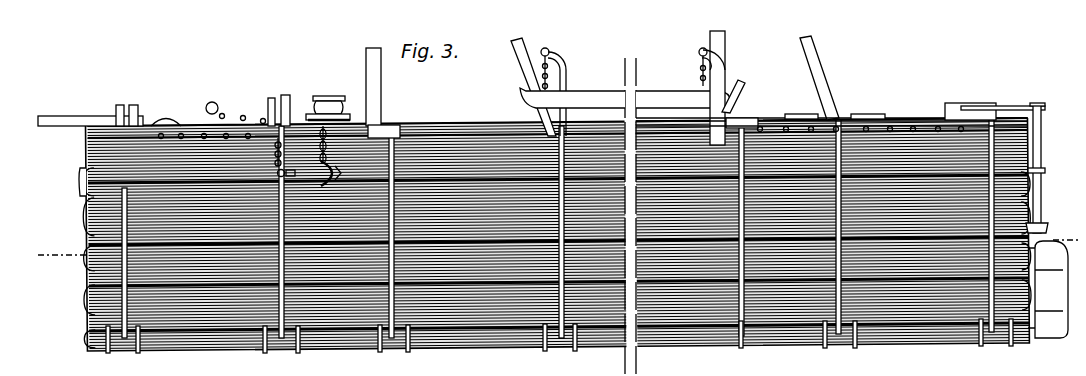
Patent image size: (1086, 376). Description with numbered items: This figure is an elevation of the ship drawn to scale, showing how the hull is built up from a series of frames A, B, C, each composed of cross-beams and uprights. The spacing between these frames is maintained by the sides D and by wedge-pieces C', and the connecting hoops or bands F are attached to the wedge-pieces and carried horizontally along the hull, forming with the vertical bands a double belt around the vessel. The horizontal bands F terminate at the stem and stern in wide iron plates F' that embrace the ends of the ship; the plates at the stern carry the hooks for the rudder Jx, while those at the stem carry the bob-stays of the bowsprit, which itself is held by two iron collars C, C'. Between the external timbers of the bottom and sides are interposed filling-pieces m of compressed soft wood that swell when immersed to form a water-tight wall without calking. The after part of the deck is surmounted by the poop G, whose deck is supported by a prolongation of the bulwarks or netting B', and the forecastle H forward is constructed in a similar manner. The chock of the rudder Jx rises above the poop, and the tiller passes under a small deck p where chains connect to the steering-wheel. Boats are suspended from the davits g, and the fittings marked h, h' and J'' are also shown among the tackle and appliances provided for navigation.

The frame A is at (557, 234).
The frame B is at (558, 228).
The bulwarks or netting B' is at (832, 140).
The frame C is at (152, 134).
The wedge-pieces C' is at (559, 275).
The sides D is at (281, 158).
The connecting hoops or bands F is at (558, 205).
The wide iron plates F' is at (559, 297).
The poop G is at (832, 173).
The davits g is at (628, 88).
The forecastle H is at (205, 143).
The post h is at (277, 130).
The post h' is at (286, 103).
The end bracket J'' is at (71, 182).
The rudder Jx is at (1048, 289).
The filling-pieces m is at (1043, 168).
The small deck p is at (995, 104).